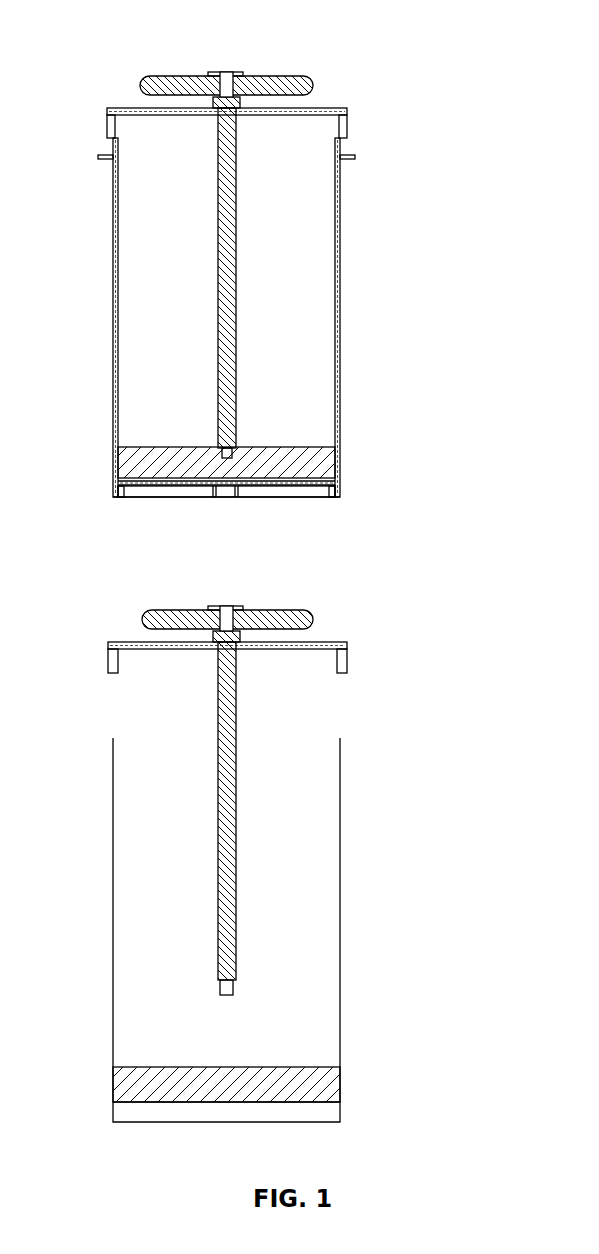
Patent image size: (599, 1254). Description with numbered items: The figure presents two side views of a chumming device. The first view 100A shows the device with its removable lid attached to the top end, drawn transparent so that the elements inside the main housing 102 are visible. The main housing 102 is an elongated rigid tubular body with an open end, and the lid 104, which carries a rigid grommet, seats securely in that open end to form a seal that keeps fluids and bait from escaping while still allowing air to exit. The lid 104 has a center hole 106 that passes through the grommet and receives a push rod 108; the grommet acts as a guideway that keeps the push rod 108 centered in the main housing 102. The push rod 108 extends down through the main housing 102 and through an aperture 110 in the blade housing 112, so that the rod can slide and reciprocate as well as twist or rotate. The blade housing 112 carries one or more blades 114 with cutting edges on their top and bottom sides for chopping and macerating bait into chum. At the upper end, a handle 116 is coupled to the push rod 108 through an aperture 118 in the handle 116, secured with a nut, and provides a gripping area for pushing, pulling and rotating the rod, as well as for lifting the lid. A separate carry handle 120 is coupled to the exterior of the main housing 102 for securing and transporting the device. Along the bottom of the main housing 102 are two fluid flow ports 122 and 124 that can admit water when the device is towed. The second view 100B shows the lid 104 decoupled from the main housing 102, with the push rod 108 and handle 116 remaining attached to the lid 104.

The side view of chumming device with lid attached 100A is at (457, 73).
The side view of chumming device with lid decoupled 100B is at (423, 606).
The main housing 102 is at (340, 243).
The lid 104 is at (347, 130).
The center hole 106 is at (213, 102).
The push rod 108 is at (236, 293).
The aperture 110 is at (233, 448).
The blade housing 112 is at (313, 447).
The blades 114 is at (138, 465).
The handle 116 is at (298, 76).
The aperture 118 is at (205, 75).
The carry handle 120 is at (347, 160).
The fluid flow port 122 is at (215, 497).
The fluid flow port 124 is at (240, 497).